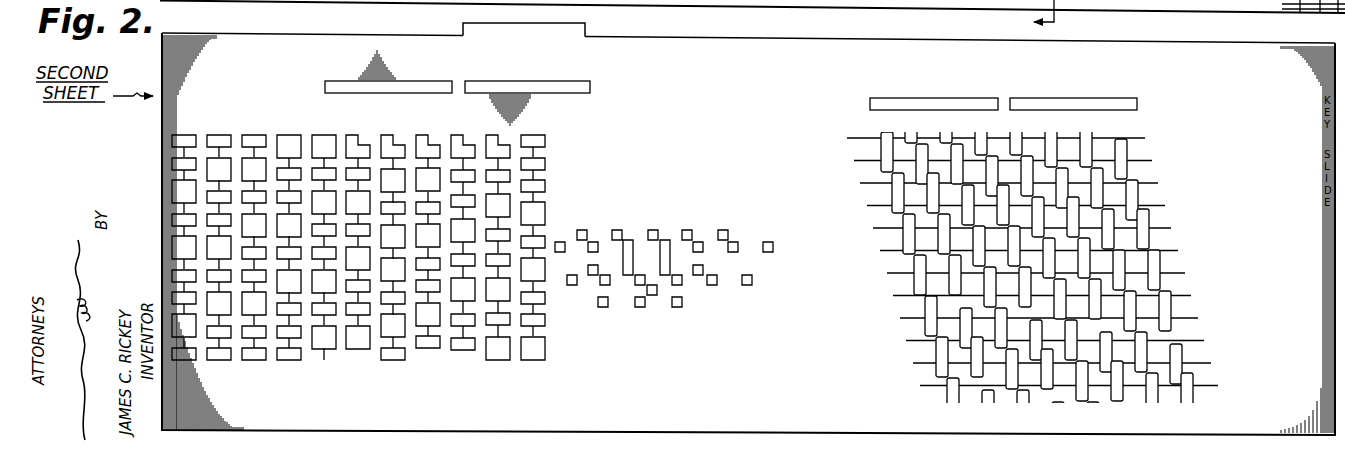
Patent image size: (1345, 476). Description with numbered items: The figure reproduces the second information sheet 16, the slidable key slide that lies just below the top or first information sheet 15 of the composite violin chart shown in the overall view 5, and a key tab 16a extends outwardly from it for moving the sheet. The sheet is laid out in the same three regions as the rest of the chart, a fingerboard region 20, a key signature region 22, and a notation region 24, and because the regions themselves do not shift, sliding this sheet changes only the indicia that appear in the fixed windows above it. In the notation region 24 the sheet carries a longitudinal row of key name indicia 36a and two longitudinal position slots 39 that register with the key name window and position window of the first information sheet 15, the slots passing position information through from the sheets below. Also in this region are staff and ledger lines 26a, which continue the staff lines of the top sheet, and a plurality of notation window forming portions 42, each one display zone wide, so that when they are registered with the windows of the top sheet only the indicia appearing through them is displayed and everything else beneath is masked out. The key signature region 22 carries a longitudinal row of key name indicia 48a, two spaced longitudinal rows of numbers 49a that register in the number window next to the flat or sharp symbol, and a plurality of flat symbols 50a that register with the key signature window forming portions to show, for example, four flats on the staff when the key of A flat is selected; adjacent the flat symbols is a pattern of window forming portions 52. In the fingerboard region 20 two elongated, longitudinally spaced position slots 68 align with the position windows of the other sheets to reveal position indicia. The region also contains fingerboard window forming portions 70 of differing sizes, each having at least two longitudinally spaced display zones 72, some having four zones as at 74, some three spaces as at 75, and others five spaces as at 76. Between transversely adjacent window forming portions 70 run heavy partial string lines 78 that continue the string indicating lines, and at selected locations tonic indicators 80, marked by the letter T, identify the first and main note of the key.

The pointer 5 is at (1054, 19).
The first information sheet 15 is at (1279, 14).
The second information sheet 16 is at (801, 49).
The key tab 16a is at (582, 37).
The fingerboard region 20 is at (285, 105).
The key signature region 22 is at (677, 153).
The notation region 24 is at (1071, 72).
The staff and ledger lines 26a is at (1166, 214).
The key name indicia 36a is at (1139, 83).
The position slots 39 is at (1135, 111).
The notation window forming portions 42 is at (1140, 180).
The key name indicia 48a is at (778, 162).
The rows of numbers 49a is at (818, 197).
The flat symbols 50a is at (820, 318).
The window forming portions 52 is at (677, 310).
The position slots 68 is at (543, 82).
The fingerboard window forming portions 70 is at (549, 134).
The display zones 72 is at (463, 350).
The four display zones 74 is at (545, 360).
The three display spaces 75 is at (428, 135).
The five display spaces 76 is at (500, 135).
The partial string lines 78 is at (428, 348).
The tonic indicators 80 is at (335, 165).